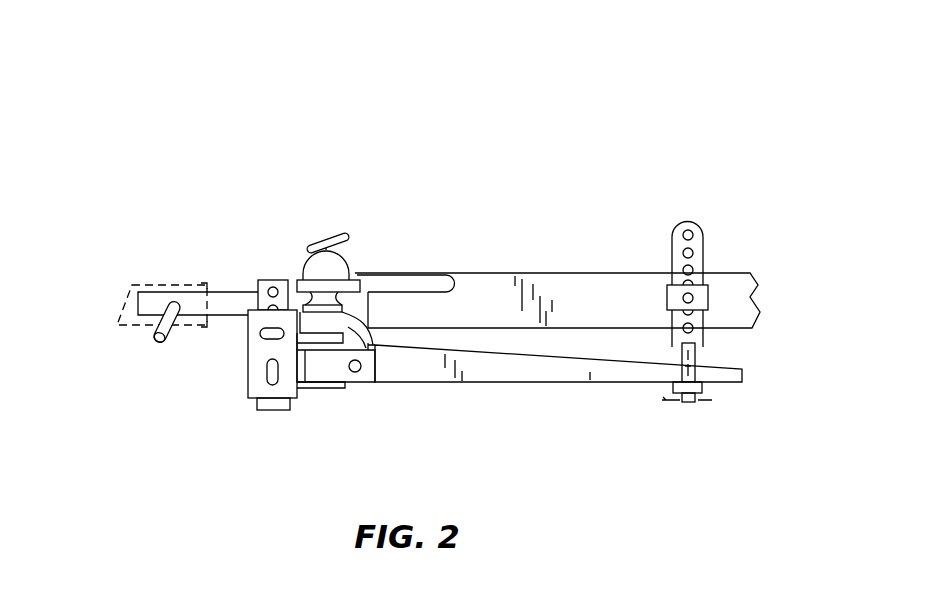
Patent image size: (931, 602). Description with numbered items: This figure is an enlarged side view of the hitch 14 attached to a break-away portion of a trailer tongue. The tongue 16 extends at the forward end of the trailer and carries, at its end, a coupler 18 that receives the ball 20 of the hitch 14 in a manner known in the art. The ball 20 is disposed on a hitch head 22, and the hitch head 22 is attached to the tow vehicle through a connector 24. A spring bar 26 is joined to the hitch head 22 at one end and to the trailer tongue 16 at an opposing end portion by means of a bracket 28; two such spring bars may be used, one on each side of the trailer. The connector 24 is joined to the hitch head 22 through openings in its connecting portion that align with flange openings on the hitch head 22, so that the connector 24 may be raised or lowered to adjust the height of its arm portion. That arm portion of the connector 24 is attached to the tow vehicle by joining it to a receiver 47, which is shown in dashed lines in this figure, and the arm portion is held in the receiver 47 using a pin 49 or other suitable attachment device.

The hitch 14 is at (541, 120).
The tongue 16 is at (735, 275).
The coupler 18 is at (318, 240).
The ball 20 is at (330, 300).
The hitch head 22 is at (368, 340).
The connector 24 is at (232, 302).
The spring bar 26 is at (598, 382).
The bracket 28 is at (705, 237).
The receiver 47 is at (120, 327).
The pin 49 is at (160, 348).